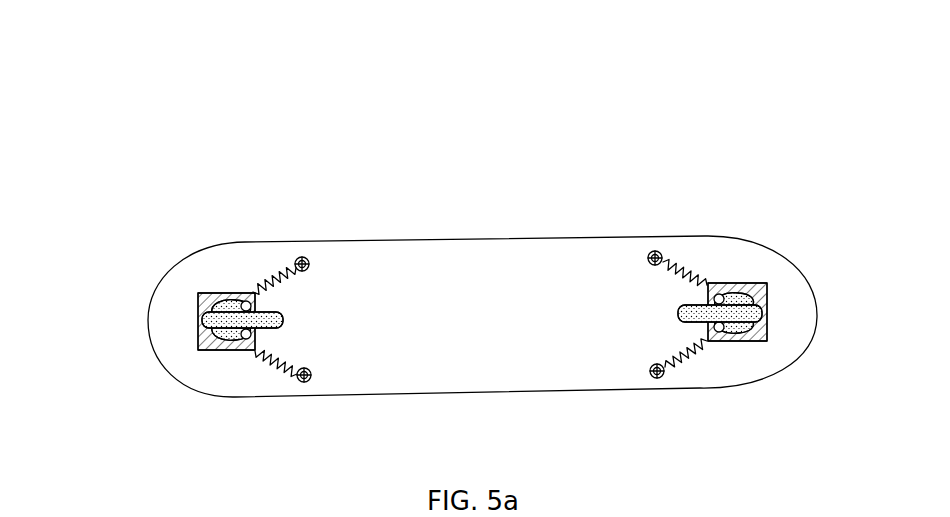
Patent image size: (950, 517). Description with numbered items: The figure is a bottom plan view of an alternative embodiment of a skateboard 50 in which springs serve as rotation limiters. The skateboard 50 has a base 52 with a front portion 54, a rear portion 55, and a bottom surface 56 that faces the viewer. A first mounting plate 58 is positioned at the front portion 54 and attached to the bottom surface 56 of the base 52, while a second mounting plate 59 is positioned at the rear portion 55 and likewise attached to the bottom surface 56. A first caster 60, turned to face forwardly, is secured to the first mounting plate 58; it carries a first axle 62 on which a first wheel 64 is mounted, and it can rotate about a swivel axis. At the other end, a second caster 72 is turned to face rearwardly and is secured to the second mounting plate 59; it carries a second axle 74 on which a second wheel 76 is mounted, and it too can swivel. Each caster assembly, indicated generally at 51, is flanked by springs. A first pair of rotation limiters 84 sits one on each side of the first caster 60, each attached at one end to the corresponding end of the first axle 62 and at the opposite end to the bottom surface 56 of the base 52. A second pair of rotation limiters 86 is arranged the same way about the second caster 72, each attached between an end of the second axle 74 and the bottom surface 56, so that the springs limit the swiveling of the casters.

The skateboard 50 is at (635, 145).
The truck assembly 51 is at (178, 308).
The base 52 is at (497, 240).
The front portion 54 is at (243, 253).
The rear portion 55 is at (740, 250).
The bottom surface 56 is at (490, 315).
The first mounting plate 58 is at (211, 293).
The second mounting plate 59 is at (792, 298).
The first caster 60 is at (207, 352).
The first axle 62 is at (237, 350).
The first wheel 64 is at (285, 321).
The second caster 72 is at (750, 342).
The second axle 74 is at (683, 274).
The second wheel 76 is at (679, 316).
The first pair of rotation limiters 84 is at (300, 257).
The second pair of rotation limiters 86 is at (665, 412).